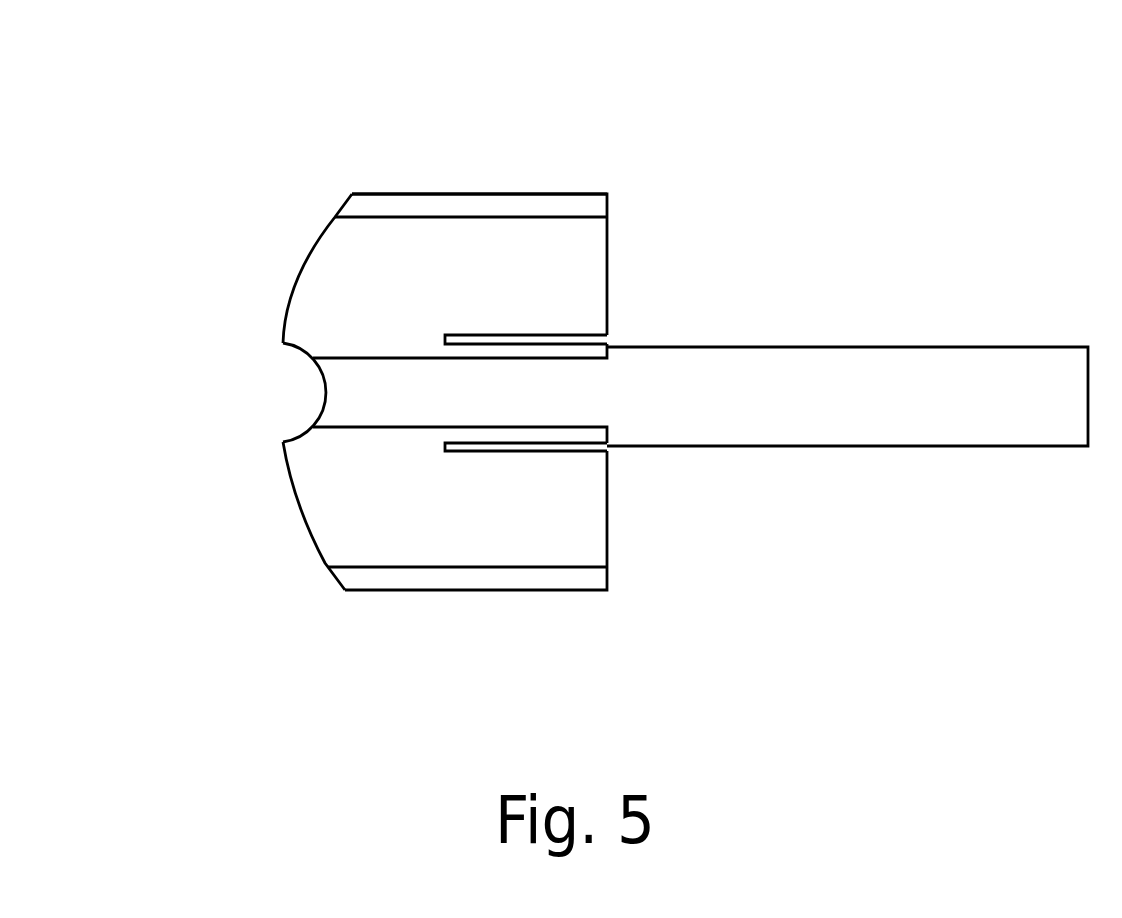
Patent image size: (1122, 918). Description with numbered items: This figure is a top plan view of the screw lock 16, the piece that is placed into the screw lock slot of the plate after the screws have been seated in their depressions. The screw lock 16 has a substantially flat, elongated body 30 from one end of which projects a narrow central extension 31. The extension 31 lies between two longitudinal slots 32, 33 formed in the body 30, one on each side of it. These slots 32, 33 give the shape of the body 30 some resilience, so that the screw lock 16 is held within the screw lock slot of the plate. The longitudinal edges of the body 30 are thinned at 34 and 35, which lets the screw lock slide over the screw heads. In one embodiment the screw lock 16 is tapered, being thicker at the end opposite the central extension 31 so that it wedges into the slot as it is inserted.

The screw lock 16 is at (302, 272).
The body 30 is at (407, 268).
The central extension 31 is at (882, 392).
The longitudinal slot 32 is at (573, 335).
The longitudinal slot 33 is at (575, 452).
The thinned edge 34 is at (523, 193).
The thinned edge 35 is at (577, 591).